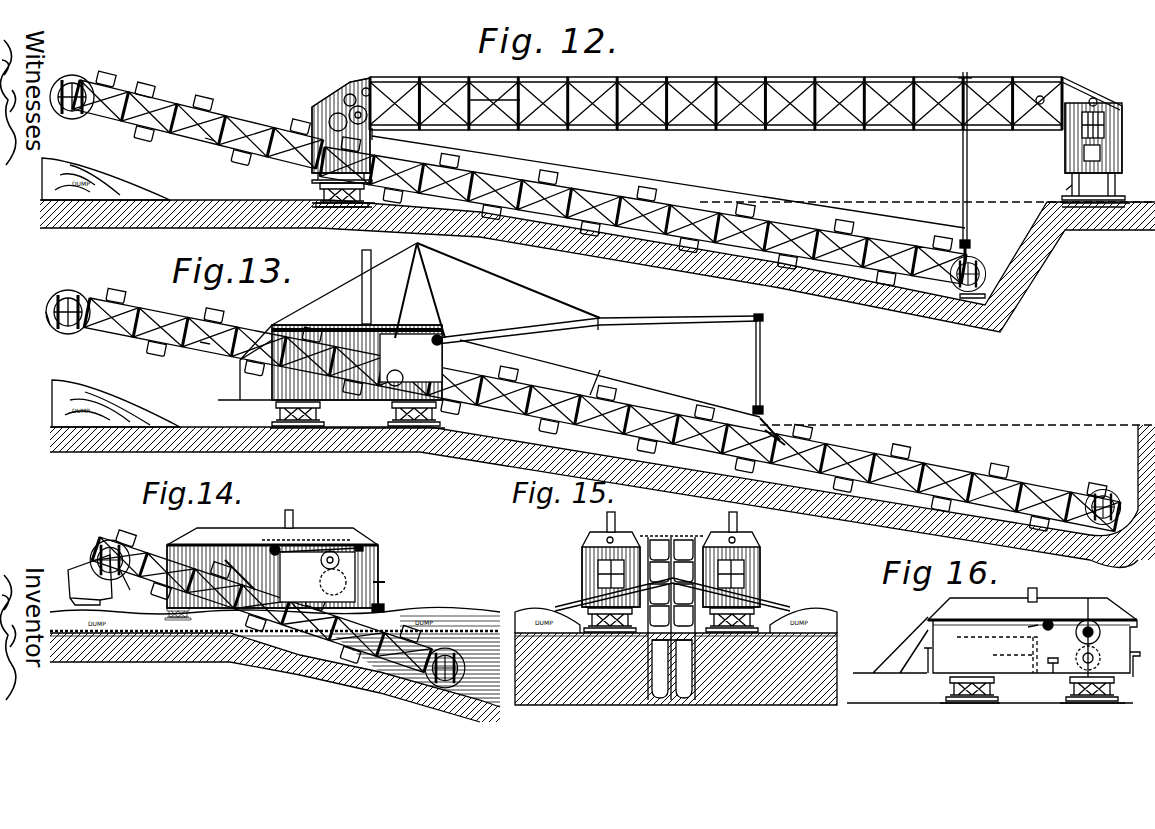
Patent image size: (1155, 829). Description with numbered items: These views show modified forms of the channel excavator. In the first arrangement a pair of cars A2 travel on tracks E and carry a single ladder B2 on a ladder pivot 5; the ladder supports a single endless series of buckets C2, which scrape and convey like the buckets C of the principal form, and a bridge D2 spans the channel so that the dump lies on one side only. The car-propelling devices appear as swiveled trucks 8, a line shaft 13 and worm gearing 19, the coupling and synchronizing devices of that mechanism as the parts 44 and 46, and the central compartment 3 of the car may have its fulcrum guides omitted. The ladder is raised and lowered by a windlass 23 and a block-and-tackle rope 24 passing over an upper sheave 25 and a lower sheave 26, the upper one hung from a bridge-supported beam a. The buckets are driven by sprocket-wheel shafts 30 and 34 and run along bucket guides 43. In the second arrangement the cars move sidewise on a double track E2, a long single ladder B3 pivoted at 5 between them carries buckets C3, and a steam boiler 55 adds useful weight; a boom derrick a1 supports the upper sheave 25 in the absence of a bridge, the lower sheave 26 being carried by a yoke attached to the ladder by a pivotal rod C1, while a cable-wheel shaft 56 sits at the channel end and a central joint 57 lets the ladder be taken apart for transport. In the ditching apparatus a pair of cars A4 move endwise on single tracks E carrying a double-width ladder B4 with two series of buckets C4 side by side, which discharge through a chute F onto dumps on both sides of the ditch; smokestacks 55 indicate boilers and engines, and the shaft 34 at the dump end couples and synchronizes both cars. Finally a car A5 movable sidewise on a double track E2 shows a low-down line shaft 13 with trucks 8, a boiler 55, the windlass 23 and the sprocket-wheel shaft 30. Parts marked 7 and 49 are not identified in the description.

In FIG. 12, the sprocket-wheel shaft 34 is at (76, 88).
In FIG. 13, the sprocket-wheel shaft 34 is at (62, 300).
In FIG. 14, the sprocket-wheel shaft 34 is at (102, 548).
In FIG. 15, the sprocket-wheel shaft 34 is at (671, 532).
In FIG. 12, the bucket guide 43 is at (205, 140).
In FIG. 13, the bucket guide 43 is at (205, 350).
In FIG. 12, the central compartment 3 is at (1065, 192).
In FIG. 12, the ladder pivot 5 is at (330, 160).
In FIG. 13, the ladder pivot 5 is at (390, 392).
In FIG. 14, the ladder pivot 5 is at (238, 571).
In FIG. 12, the swiveled trucks 8 is at (320, 188).
In FIG. 13, the swiveled trucks 8 is at (356, 414).
In FIG. 14, the swiveled trucks 8 is at (178, 614).
In FIG. 15, the swiveled trucks 8 is at (740, 630).
In FIG. 16, the swiveled trucks 8 is at (1026, 689).
In FIG. 12, the line shaft 13 is at (366, 88).
In FIG. 14, the line shaft 13 is at (306, 541).
In FIG. 15, the line shaft 13 is at (614, 538).
In FIG. 16, the line shaft 13 is at (1022, 673).
In FIG. 12, the worm gearing 19 is at (360, 195).
In FIG. 12, the windlass 23 is at (376, 130).
In FIG. 13, the windlass 23 is at (440, 336).
In FIG. 14, the windlass 23 is at (275, 557).
In FIG. 16, the windlass 23 is at (1036, 624).
In FIG. 12, the block and tackle rope 24 is at (680, 182).
In FIG. 13, the block and tackle rope 24 is at (619, 369).
In FIG. 14, the block and tackle rope 24 is at (333, 578).
In FIG. 13, the upper sheave 25 is at (767, 318).
In FIG. 14, the upper sheave 25 is at (363, 546).
In FIG. 12, the lower sheave 26 is at (975, 241).
In FIG. 13, the lower sheave 26 is at (767, 408).
In FIG. 14, the lower sheave 26 is at (384, 606).
In FIG. 14, the sprocket-wheel shaft 30 is at (338, 573).
In FIG. 16, the sprocket-wheel shaft 30 is at (1095, 637).
In FIG. 12, the coupling and synchronizing device 44 is at (350, 94).
In FIG. 12, the coupling and synchronizing device 46 is at (367, 113).
In FIG. 12, the bridge truss 49 is at (495, 93).
In FIG. 13, the steam boiler 55 is at (376, 287).
In FIG. 14, the steam boiler 55 is at (285, 518).
In FIG. 15, the steam boiler 55 is at (661, 522).
In FIG. 16, the steam boiler 55 is at (1042, 592).
In FIG. 13, the cable-wheel shaft 56 is at (1103, 492).
In FIG. 13, the central joint 57 is at (593, 376).
In FIG. 12, the shaft 7 is at (972, 258).
In FIG. 12, the bridge-supported beam a is at (969, 154).
In FIG. 13, the boom derrick a1 is at (597, 324).
In FIG. 12, the cars A2 is at (330, 106).
In FIG. 14, the cars A4 is at (272, 557).
In FIG. 15, the cars A4 is at (768, 538).
In FIG. 13, the car A5 is at (330, 351).
In FIG. 16, the car A5 is at (1032, 624).
In FIG. 12, the ladder B2 is at (236, 120).
In FIG. 13, the long single ladder B3 is at (130, 300).
In FIG. 14, the double-width ladder B4 is at (150, 552).
In FIG. 15, the double-width ladder B4 is at (671, 606).
In FIG. 12, the endless series of scraping and conveying buckets C is at (985, 285).
In FIG. 13, the pivotal rod C1 is at (780, 428).
In FIG. 12, the series of buckets C2 is at (870, 226).
In FIG. 13, the series of buckets C3 is at (40, 325).
In FIG. 14, the series of buckets C4 is at (130, 588).
In FIG. 15, the series of buckets C4 is at (672, 651).
In FIG. 12, the bridge D2 is at (716, 94).
In FIG. 12, the tracks E is at (718, 211).
In FIG. 14, the tracks E is at (190, 645).
In FIG. 15, the tracks E is at (676, 648).
In FIG. 13, the double track E2 is at (340, 430).
In FIG. 16, the double track E2 is at (1072, 704).
In FIG. 14, the chute F is at (70, 598).
In FIG. 15, the chute F is at (782, 604).